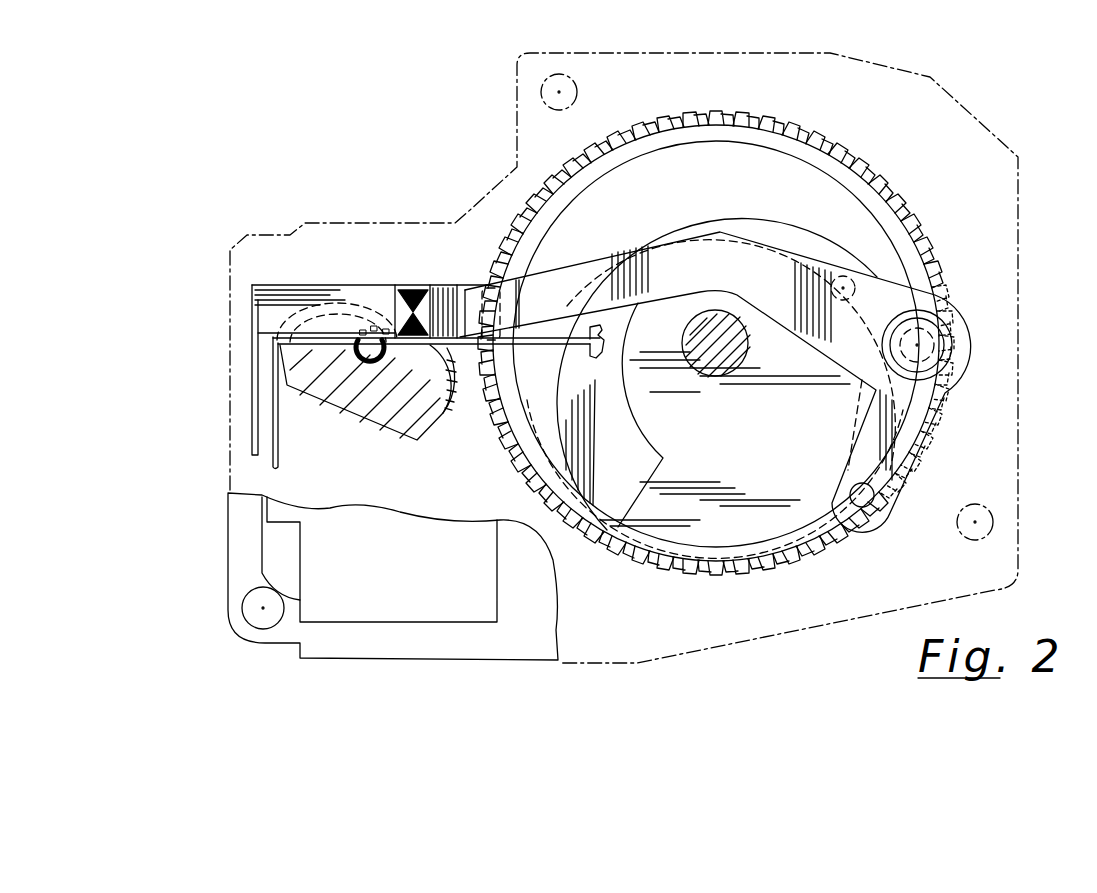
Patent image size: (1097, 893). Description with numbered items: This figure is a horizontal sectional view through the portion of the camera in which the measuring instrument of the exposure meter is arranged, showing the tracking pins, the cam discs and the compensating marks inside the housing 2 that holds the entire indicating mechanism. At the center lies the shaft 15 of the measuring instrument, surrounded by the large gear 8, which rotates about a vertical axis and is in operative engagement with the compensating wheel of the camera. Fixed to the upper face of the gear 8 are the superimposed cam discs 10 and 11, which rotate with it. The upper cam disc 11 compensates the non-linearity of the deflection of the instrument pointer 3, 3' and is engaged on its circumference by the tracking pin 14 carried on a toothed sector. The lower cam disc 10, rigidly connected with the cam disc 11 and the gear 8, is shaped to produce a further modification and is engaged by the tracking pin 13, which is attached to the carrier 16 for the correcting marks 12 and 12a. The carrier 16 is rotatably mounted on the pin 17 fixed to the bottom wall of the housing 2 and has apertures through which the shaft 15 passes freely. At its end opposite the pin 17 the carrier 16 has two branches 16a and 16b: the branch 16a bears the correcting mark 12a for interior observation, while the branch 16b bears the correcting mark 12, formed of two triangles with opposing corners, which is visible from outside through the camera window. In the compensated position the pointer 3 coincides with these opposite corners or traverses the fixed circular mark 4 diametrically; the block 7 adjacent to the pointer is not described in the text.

The housing 2 is at (238, 567).
The instrument pointer 3 is at (438, 377).
The angular indicator portion 3' is at (231, 406).
The fixed mark 4 is at (352, 358).
The hatched block 7 is at (385, 412).
The gear 8 is at (858, 163).
The cam disc 10 is at (568, 432).
The cam disc 11 is at (722, 535).
The correcting mark 12 is at (414, 316).
The correcting mark 12a is at (250, 402).
The tracking pin 13 is at (860, 500).
The tracking pin 14 is at (843, 276).
The shaft 15 is at (748, 345).
The carrier 16 is at (723, 242).
The branch 16a is at (332, 300).
The branch 16b is at (487, 290).
The pin 17 is at (925, 345).